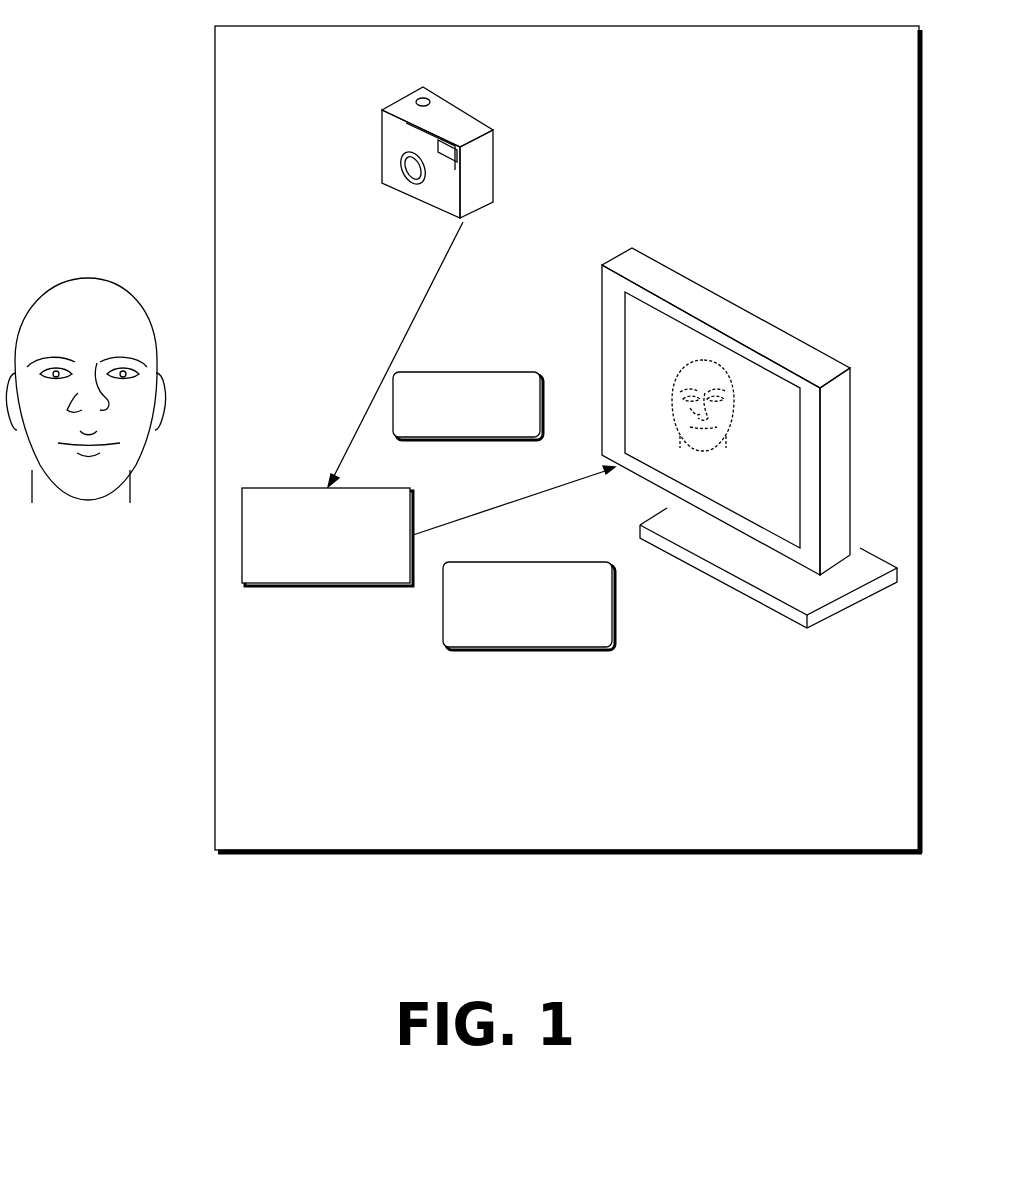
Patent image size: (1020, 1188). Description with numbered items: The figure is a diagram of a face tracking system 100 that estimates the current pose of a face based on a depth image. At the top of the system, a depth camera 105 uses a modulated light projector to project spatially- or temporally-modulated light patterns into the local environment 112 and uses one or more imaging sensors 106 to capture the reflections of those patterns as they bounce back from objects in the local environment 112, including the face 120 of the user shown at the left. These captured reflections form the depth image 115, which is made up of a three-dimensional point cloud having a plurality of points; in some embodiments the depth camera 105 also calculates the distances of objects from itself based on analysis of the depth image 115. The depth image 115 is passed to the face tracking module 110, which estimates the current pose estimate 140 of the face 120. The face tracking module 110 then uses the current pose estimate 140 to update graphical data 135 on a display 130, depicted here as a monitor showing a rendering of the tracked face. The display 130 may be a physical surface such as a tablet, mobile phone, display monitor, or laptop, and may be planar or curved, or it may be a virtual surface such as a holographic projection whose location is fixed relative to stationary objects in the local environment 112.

The face tracking system 100 is at (553, 839).
The depth camera 105 is at (493, 132).
The imaging sensor 106 is at (420, 182).
The face tracking module 110 is at (313, 571).
The local environment 112 is at (44, 191).
The depth image 115 is at (453, 425).
The face 120 is at (93, 517).
The display 130 is at (737, 290).
The graphical data 135 is at (737, 452).
The current pose estimate 140 is at (514, 638).